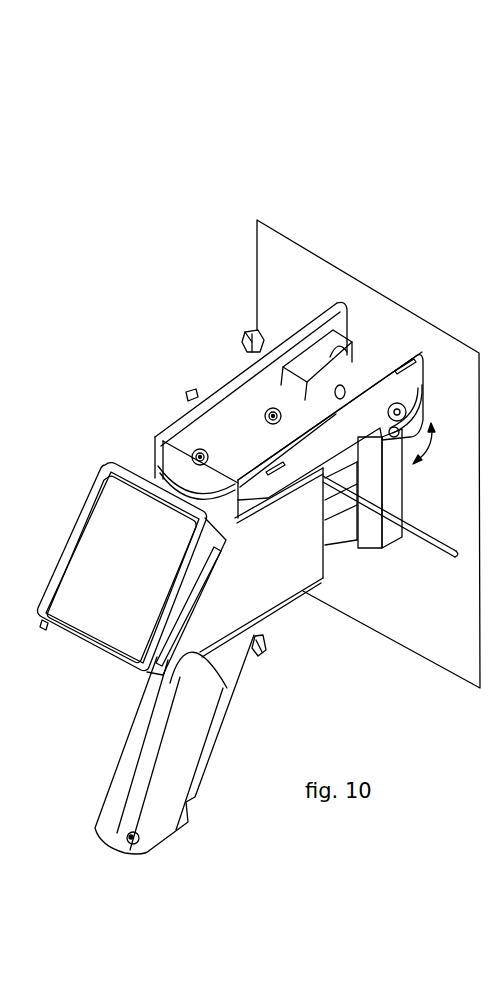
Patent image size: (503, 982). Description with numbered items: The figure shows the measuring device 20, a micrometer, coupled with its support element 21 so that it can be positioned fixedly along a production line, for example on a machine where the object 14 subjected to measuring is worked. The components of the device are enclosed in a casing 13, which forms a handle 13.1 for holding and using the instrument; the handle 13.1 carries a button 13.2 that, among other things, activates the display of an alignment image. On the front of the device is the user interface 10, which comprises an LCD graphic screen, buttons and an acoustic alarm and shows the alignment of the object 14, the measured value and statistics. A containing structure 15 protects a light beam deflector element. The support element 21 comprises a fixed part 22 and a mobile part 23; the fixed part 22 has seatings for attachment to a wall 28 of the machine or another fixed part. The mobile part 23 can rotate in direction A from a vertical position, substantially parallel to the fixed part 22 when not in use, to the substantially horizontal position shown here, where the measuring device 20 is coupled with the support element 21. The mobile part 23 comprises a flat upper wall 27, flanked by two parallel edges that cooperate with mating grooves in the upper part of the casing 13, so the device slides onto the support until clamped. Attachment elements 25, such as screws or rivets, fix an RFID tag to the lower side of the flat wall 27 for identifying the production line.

The user interface 10 is at (97, 612).
The casing 13 is at (283, 585).
The handle 13.1 is at (193, 749).
The button 13.2 is at (258, 642).
The object 14 is at (432, 540).
The containing structure 15 is at (337, 532).
The measuring device 20 is at (66, 494).
The support element 21 is at (192, 366).
The fixed part 22 is at (392, 492).
The mobile part 23 is at (380, 385).
The attachment elements 25 is at (268, 421).
The flat upper wall 27 is at (203, 433).
The wall 28 is at (290, 270).
The rotation direction A is at (428, 447).